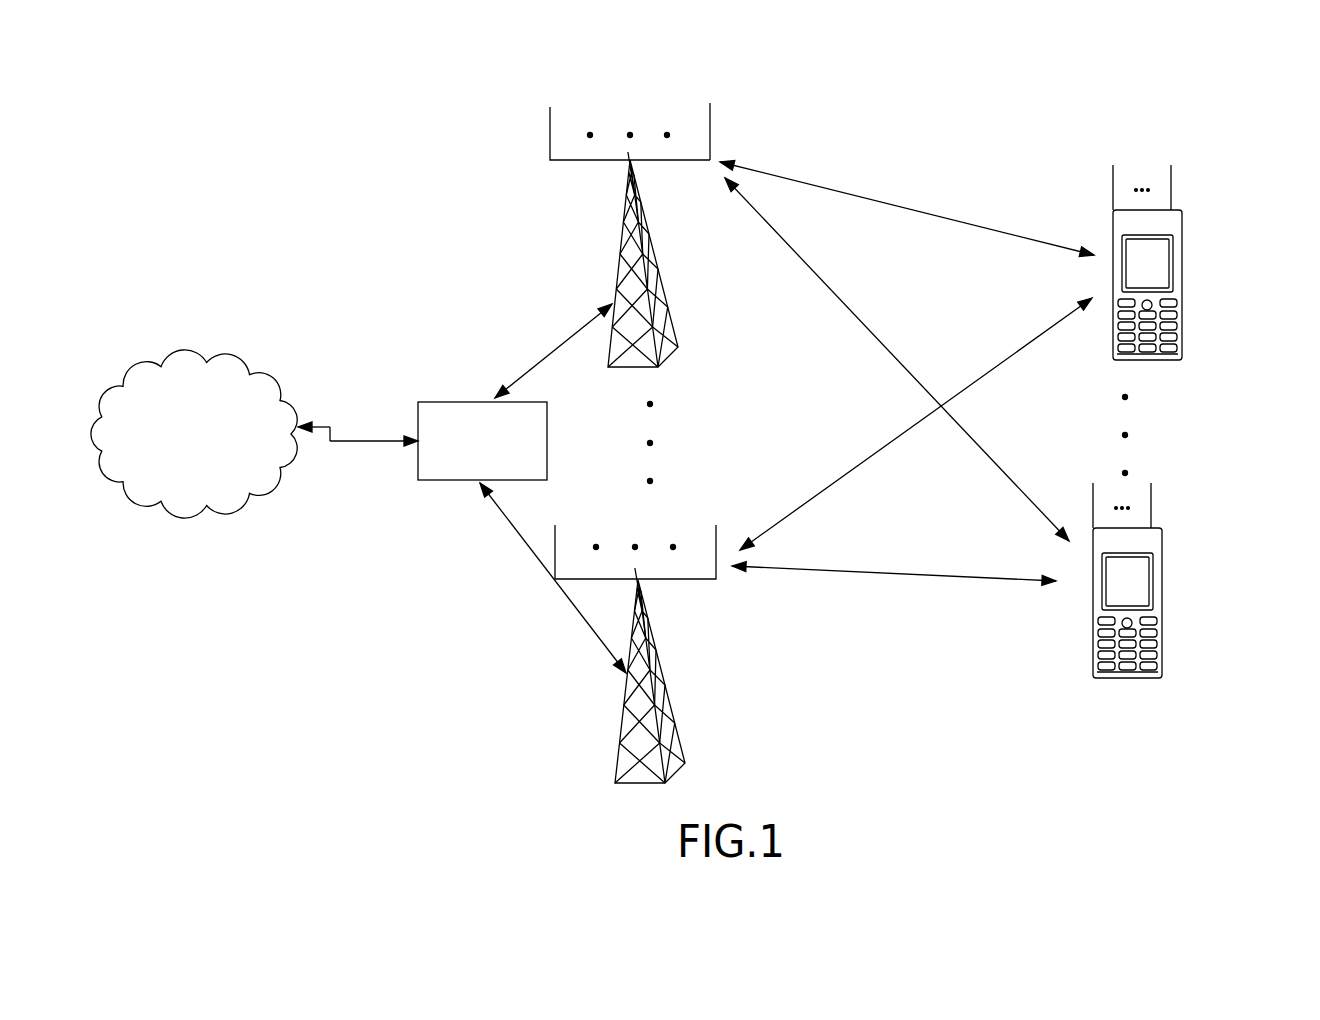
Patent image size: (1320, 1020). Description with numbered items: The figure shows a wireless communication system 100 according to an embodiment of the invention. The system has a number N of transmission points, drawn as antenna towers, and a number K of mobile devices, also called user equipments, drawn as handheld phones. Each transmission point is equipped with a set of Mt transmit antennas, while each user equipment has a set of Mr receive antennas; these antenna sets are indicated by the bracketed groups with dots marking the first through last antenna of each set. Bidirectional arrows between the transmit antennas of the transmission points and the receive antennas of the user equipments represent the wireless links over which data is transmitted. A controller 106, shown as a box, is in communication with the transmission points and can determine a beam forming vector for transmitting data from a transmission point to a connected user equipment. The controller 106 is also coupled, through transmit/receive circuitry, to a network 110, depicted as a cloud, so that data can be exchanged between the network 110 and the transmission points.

The wireless communication system 100 is at (340, 130).
The controller 106 is at (442, 401).
The network 110 is at (263, 366).